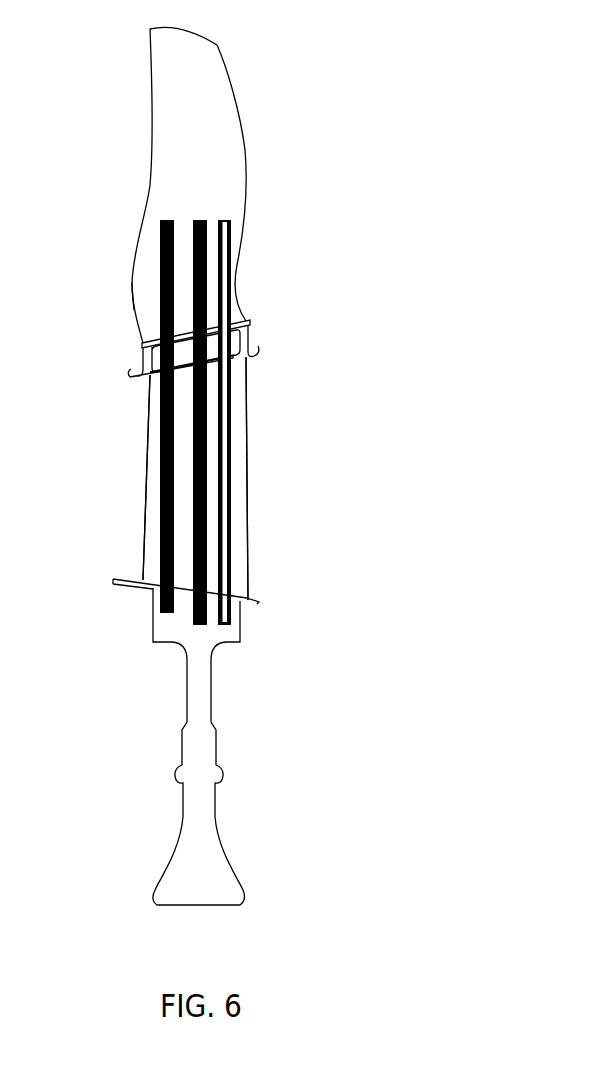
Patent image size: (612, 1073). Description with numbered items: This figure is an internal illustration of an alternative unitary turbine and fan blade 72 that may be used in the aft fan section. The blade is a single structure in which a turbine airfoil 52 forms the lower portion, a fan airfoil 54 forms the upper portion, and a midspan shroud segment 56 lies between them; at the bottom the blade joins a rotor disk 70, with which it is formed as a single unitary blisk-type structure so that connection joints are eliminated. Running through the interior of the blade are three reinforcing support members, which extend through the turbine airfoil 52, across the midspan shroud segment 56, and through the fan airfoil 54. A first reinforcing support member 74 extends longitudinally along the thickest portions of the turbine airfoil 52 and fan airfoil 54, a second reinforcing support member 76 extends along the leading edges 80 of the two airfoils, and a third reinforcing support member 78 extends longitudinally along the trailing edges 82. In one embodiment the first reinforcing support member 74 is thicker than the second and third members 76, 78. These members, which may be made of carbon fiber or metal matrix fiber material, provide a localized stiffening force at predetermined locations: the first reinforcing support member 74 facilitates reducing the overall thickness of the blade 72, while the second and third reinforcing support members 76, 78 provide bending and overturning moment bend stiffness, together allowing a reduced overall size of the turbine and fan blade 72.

The unitary turbine and fan blade 72 is at (97, 50).
The fan airfoil 54 is at (245, 159).
The turbine airfoil 52 is at (246, 483).
The trailing edges 82 is at (238, 125).
The leading edges 80 is at (131, 277).
The midspan shroud segment 56 is at (250, 335).
The first reinforcing support member 74 is at (200, 218).
The second reinforcing support member 76 is at (167, 218).
The third reinforcing support member 78 is at (225, 218).
The rotor disk 70 is at (227, 858).